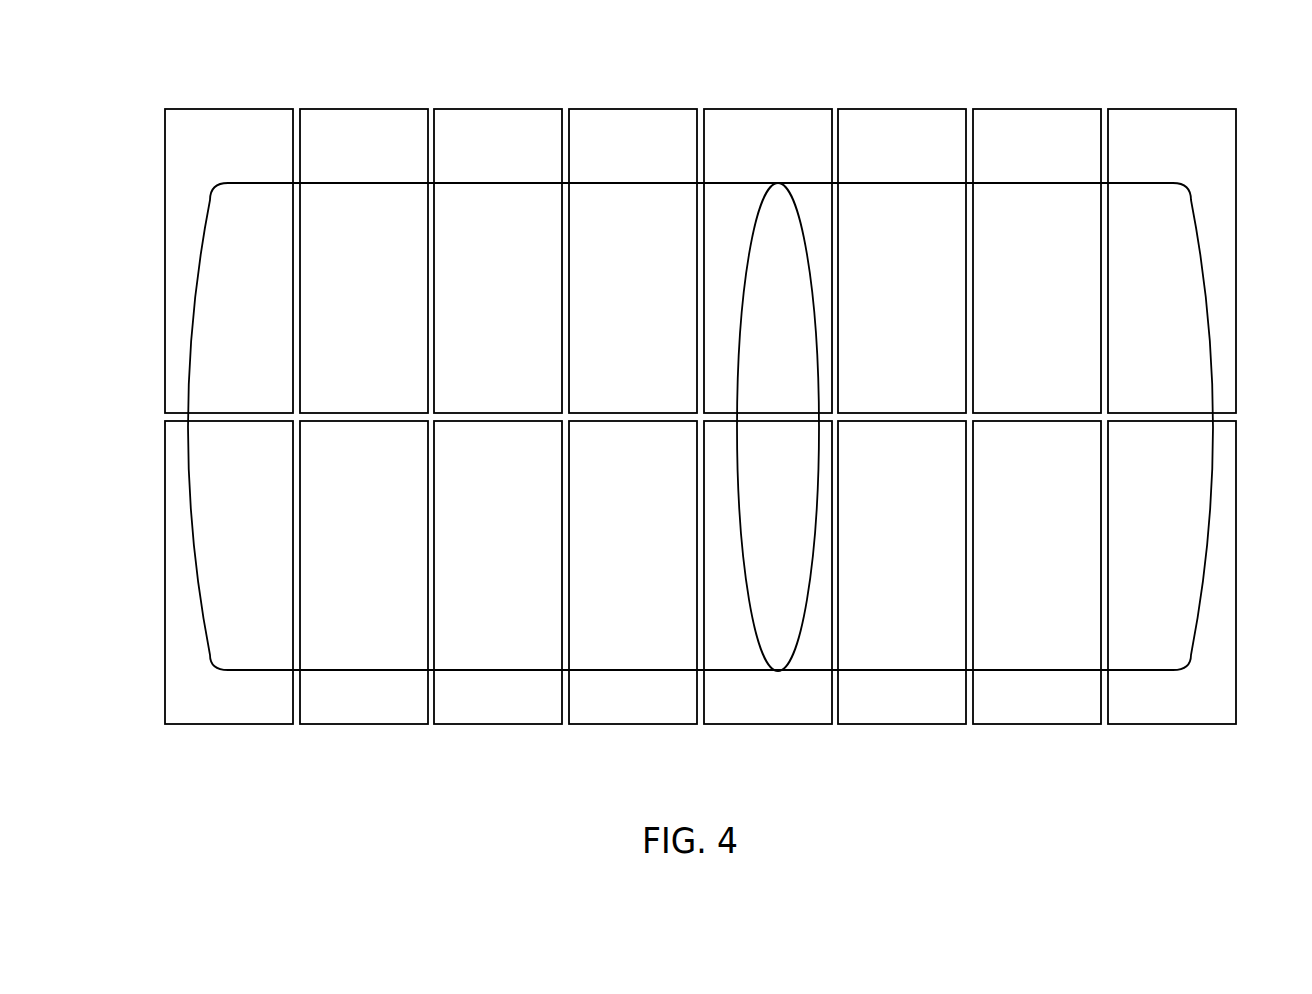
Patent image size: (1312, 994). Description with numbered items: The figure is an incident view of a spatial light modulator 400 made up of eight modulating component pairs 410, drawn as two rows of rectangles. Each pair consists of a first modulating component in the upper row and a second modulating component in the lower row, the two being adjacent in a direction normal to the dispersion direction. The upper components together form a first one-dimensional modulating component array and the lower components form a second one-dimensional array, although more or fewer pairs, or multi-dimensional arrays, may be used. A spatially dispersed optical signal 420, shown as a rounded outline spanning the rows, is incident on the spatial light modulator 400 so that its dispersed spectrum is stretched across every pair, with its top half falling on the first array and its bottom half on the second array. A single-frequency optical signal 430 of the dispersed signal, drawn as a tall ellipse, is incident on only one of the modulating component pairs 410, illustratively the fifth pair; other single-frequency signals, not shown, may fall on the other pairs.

The spatial light modulator 400 is at (143, 826).
The modulating component pairs 410 is at (700, 421).
The spatially dispersed optical signal 420 is at (1197, 232).
The single-frequency optical signal 430 is at (803, 222).